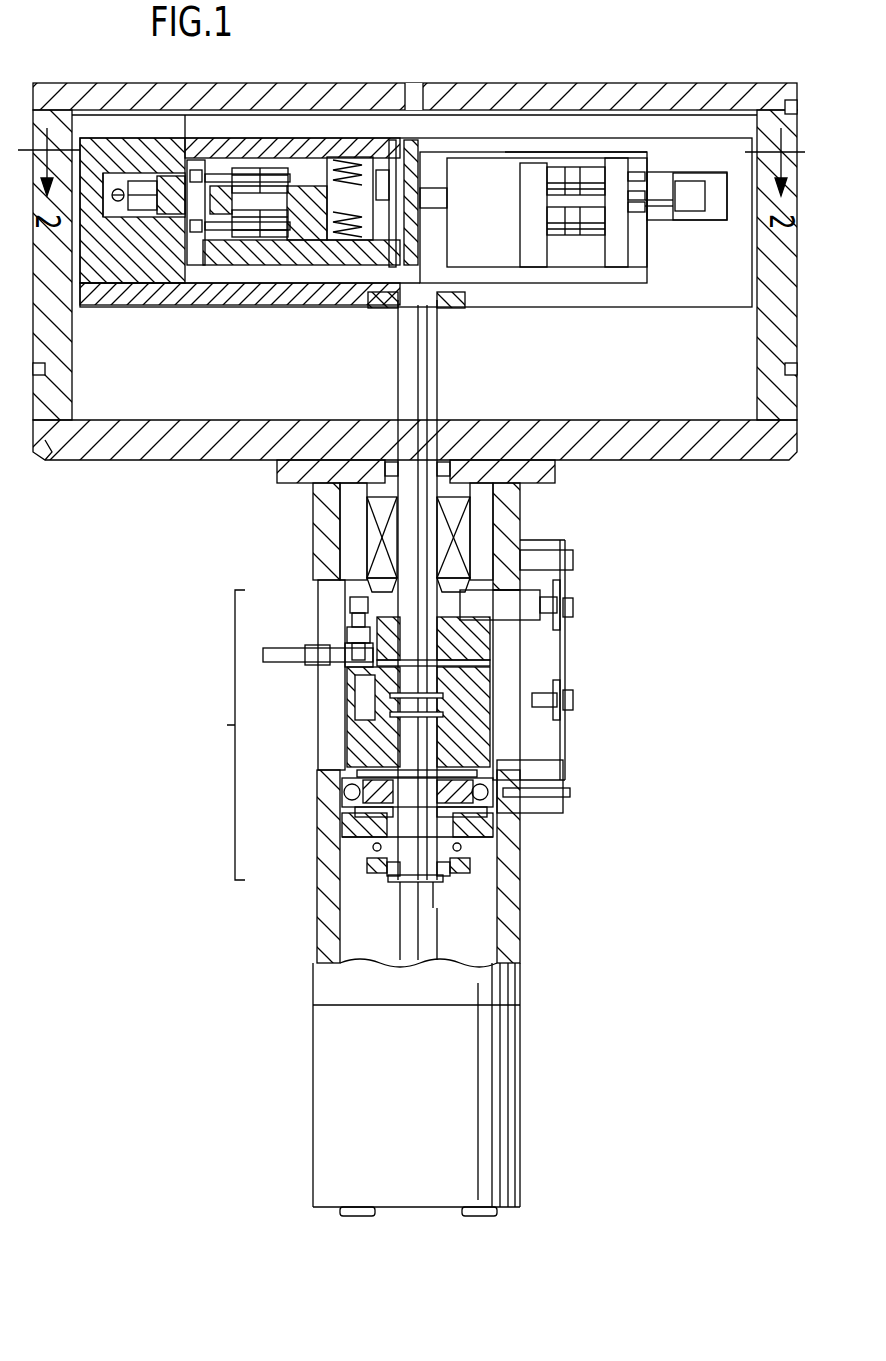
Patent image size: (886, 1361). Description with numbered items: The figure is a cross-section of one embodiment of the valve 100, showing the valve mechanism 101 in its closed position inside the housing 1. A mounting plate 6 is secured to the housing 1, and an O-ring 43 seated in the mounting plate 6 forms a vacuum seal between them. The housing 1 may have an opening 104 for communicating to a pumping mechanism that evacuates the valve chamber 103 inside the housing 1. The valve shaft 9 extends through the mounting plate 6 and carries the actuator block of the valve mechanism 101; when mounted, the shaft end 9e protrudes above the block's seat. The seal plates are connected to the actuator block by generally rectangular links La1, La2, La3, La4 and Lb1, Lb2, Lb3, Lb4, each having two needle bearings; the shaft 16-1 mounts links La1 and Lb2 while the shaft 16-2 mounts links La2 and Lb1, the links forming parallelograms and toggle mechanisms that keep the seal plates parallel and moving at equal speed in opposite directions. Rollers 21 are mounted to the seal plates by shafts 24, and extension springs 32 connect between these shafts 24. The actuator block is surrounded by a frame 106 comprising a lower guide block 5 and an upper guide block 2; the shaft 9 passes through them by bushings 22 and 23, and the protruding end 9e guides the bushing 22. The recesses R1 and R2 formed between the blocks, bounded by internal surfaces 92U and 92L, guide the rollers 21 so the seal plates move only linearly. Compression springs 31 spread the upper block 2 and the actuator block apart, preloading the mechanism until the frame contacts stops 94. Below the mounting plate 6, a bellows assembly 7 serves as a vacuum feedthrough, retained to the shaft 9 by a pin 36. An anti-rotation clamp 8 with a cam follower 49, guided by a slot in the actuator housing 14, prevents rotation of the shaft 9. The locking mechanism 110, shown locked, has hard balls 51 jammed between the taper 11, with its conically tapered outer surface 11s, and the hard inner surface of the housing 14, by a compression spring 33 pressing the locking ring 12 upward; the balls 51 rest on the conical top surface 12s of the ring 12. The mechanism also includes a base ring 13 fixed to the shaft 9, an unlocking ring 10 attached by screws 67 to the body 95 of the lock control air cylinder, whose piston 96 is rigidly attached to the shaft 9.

The housing 1 is at (62, 352).
The upper guide block 2 is at (195, 148).
The lower guide block 5 is at (230, 293).
The mounting plate 6 is at (155, 450).
The bellows assembly 7 is at (370, 535).
The anti-rotation clamp 8 is at (380, 623).
The valve shaft 9 is at (430, 365).
The end of shaft 9e is at (413, 157).
The unlocking ring 10 is at (352, 772).
The taper 11 is at (497, 802).
The conically tapered outer surface 11s is at (517, 777).
The locking ring 12 is at (345, 845).
The top surface of locking ring 12s is at (347, 817).
The base ring 13 is at (453, 878).
The actuator housing 14 is at (510, 933).
The shaft 16-1 is at (330, 165).
The shaft 16-2 is at (420, 253).
The roller 21 is at (168, 180).
The bushing 22 is at (403, 188).
The bushing 23 is at (400, 310).
The shaft 24 is at (140, 185).
The compression spring 31 is at (393, 140).
The extension spring 32 is at (112, 178).
The compression spring 33 is at (465, 848).
The pin 36 is at (417, 613).
The O-ring 43 is at (48, 424).
The cam follower 49 is at (507, 637).
The hard ball 51 is at (490, 797).
The screw 67 is at (473, 752).
The internal surface of lower block 92L is at (143, 217).
The internal surface of upper block 92U is at (705, 170).
The stop 94 is at (207, 123).
The body of lock control air cylinder 95 is at (383, 732).
The piston 96 is at (373, 708).
The valve 100 is at (512, 44).
The valve mechanism 101 is at (146, 310).
The valve chamber 103 is at (675, 400).
The opening 104 is at (415, 90).
The frame 106 is at (50, 300).
The locking mechanism 110 is at (212, 735).
The link La1 is at (245, 170).
The link La2 is at (282, 238).
The link La3 is at (563, 227).
The link La4 is at (587, 178).
The link Lb1 is at (252, 238).
The link Lb2 is at (273, 170).
The link Lb3 is at (563, 178).
The link Lb4 is at (587, 227).
The recess R1 is at (118, 212).
The recess R2 is at (712, 205).